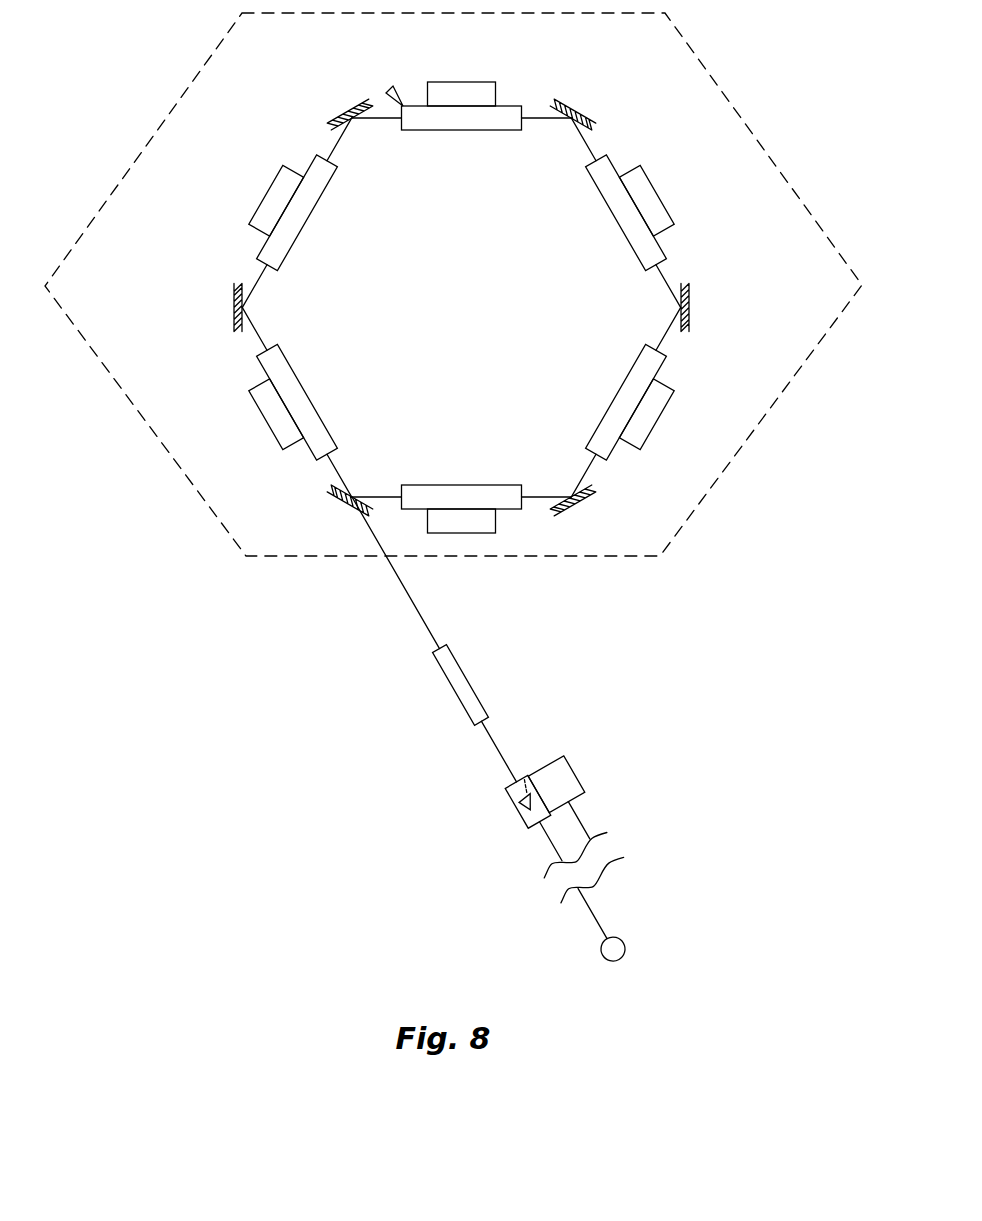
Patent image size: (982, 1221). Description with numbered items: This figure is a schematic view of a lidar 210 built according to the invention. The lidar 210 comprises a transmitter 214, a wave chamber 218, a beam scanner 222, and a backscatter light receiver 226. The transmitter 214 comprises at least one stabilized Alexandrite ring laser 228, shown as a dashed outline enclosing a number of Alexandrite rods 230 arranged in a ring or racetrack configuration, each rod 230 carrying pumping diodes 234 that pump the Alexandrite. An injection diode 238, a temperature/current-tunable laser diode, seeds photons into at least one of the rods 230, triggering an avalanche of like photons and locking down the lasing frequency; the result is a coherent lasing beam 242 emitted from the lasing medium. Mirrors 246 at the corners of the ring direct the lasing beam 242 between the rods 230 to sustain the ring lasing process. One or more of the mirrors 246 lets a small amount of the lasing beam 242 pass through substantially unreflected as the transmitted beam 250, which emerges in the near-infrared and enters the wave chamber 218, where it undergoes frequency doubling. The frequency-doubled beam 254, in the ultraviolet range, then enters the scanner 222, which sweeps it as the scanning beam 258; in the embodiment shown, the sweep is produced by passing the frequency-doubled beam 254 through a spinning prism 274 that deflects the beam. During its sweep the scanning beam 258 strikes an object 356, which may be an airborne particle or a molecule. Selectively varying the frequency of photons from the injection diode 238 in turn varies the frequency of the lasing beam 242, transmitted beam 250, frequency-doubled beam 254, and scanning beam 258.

The lidar 210 is at (294, 756).
The transmitter 214 is at (228, 610).
The wave chamber 218 is at (466, 688).
The beam scanner 222 is at (522, 806).
The backscatter light receiver 226 is at (562, 782).
The stabilized Alexandrite ring laser 228 is at (202, 500).
The Alexandrite rods 230 is at (455, 122).
The pumping diodes 234 is at (462, 96).
The injection diode 238 is at (391, 86).
The lasing beam 242 is at (340, 143).
The mirrors 246 is at (338, 112).
The transmitted beam 250 is at (398, 587).
The frequency-doubled beam 254 is at (487, 744).
The scanning beam 258 is at (546, 848).
The spinning prism 274 is at (548, 838).
The object 356 is at (627, 948).